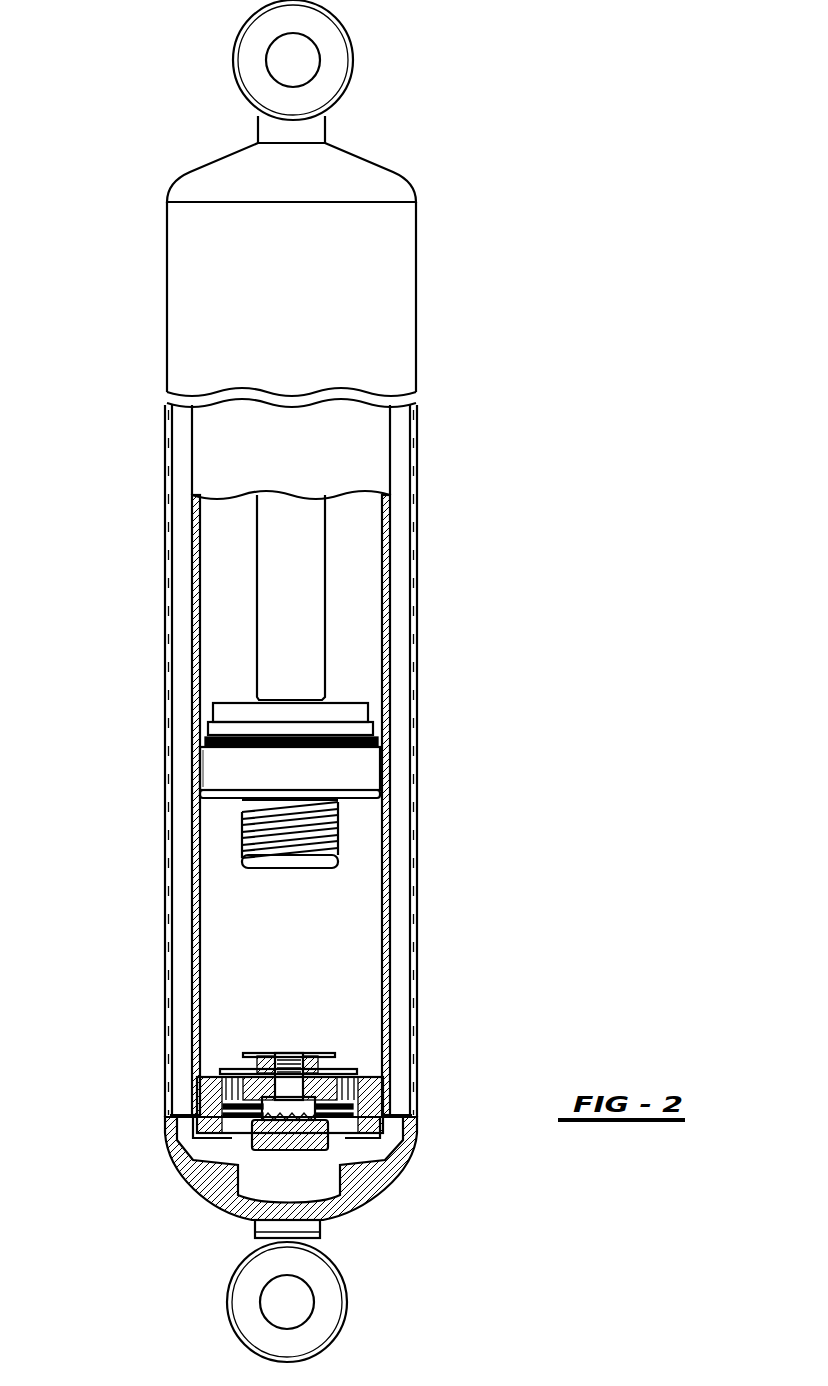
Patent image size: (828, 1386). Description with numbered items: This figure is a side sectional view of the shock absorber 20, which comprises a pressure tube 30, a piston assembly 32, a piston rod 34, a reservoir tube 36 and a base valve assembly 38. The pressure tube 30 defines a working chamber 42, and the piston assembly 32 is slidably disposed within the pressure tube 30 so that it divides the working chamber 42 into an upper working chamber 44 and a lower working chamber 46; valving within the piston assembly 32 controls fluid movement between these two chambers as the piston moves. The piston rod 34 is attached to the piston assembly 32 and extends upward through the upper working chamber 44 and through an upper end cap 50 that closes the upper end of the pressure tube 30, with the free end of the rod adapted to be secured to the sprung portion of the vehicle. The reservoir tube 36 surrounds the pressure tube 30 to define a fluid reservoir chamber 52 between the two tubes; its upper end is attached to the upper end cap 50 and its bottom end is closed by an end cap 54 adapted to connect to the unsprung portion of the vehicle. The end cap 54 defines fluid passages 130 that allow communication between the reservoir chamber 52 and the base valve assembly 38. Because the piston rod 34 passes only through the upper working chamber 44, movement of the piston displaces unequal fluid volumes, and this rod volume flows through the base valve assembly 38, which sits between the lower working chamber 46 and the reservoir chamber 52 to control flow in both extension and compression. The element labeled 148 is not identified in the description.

The shock absorber 20 is at (453, 108).
The pressure tube 30 is at (390, 521).
The piston assembly 32 is at (397, 737).
The piston rod 34 is at (306, 568).
The reservoir tube 36 is at (415, 620).
The base valve assembly 38 is at (267, 1052).
The working chamber 42 is at (358, 815).
The upper working chamber 44 is at (347, 585).
The lower working chamber 46 is at (309, 920).
The upper end cap 50 is at (360, 178).
The fluid reservoir chamber 52 is at (393, 888).
The end cap 54 is at (403, 1155).
The fluid passages 130 is at (203, 1153).
The piston seal 148 is at (230, 763).